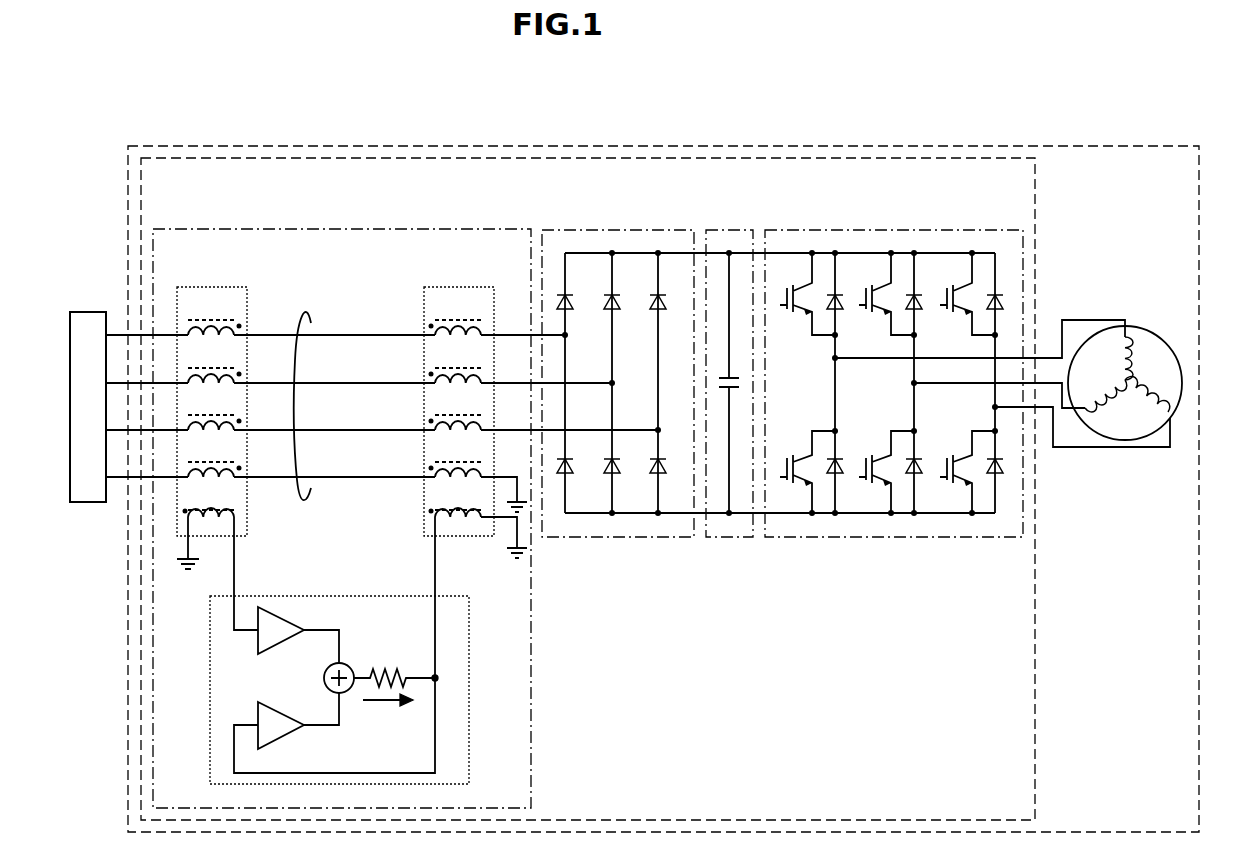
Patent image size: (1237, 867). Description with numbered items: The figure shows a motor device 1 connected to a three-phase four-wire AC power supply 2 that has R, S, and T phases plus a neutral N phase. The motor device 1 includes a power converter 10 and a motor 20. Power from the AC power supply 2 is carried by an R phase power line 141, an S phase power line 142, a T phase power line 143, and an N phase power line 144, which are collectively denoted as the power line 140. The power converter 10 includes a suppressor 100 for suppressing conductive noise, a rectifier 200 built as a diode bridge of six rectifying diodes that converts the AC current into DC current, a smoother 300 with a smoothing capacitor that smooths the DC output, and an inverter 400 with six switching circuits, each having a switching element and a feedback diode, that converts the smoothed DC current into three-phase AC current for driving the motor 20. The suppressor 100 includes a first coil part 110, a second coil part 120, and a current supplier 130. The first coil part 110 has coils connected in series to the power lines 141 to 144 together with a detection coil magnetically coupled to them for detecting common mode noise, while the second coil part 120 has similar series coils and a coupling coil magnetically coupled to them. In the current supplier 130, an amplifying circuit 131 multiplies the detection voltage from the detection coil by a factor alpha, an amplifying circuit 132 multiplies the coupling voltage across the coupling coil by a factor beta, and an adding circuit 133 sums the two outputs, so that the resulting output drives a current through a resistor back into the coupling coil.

The motor device 1 is at (127, 170).
The AC power supply 2 is at (90, 312).
The power converter 10 is at (1035, 617).
The motor 20 is at (1129, 327).
The suppressor 100 is at (332, 224).
The first coil part 110 is at (213, 288).
The second coil part 120 is at (462, 288).
The current supplier 130 is at (330, 595).
The amplifying circuit 131 is at (280, 643).
The amplifying circuit 132 is at (280, 738).
The adding circuit 133 is at (345, 691).
The power line 140 is at (306, 393).
The R phase power line 141 is at (330, 334).
The S phase power line 142 is at (330, 382).
The T phase power line 143 is at (330, 429).
The N phase power line 144 is at (330, 476).
The rectifier 200 is at (627, 228).
The smoother 300 is at (730, 228).
The inverter 400 is at (905, 228).